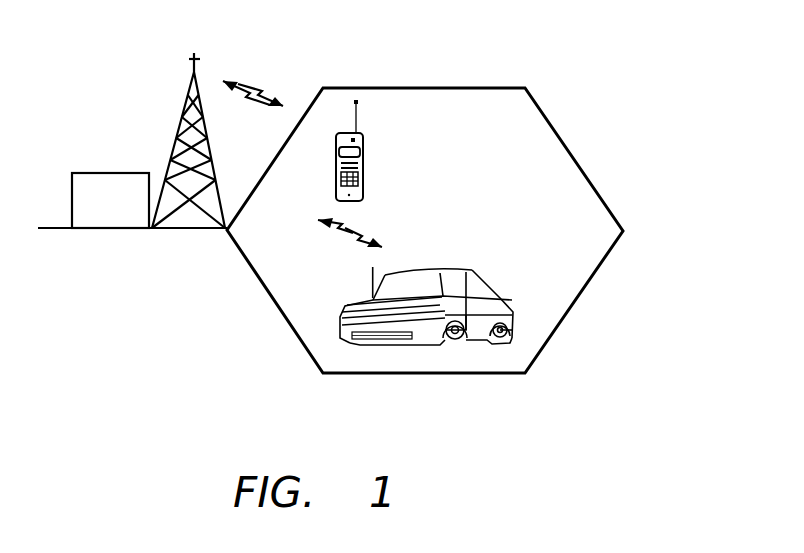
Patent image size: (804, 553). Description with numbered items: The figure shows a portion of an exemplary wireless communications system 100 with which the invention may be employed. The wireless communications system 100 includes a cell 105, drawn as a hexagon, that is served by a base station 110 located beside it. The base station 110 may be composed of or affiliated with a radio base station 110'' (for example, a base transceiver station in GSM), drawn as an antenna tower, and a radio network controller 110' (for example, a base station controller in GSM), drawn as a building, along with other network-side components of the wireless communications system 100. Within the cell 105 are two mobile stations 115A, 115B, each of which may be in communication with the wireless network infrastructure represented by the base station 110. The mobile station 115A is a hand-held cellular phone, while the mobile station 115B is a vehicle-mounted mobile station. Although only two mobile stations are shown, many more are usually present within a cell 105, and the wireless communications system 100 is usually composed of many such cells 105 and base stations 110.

The wireless communications system 100 is at (690, 46).
The cell 105 is at (525, 88).
The base station 110 is at (135, 177).
The radio network controller 110' is at (97, 237).
The radio base station 110'' is at (181, 177).
The mobile station 115A is at (363, 157).
The mobile station 115B is at (437, 268).